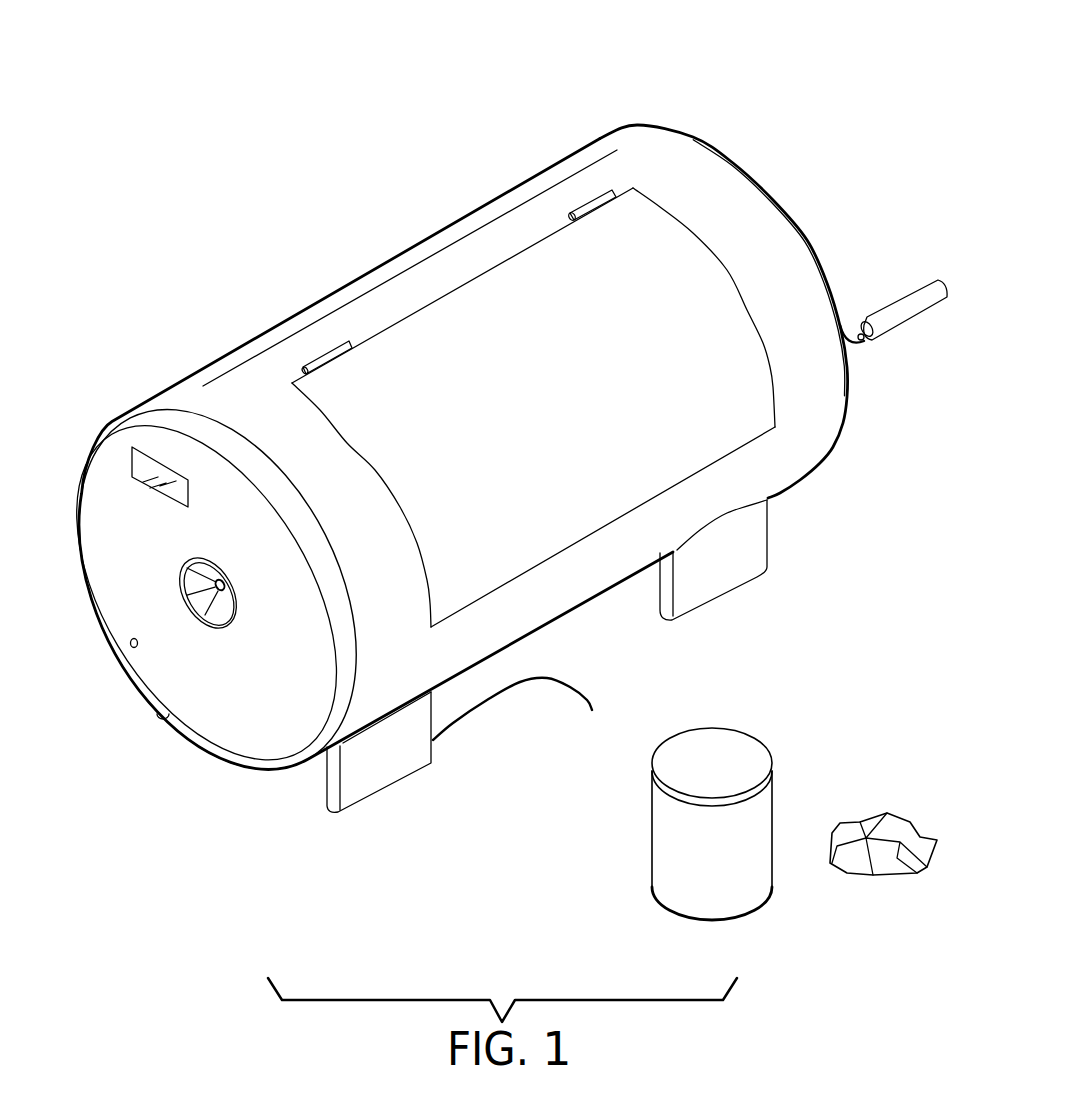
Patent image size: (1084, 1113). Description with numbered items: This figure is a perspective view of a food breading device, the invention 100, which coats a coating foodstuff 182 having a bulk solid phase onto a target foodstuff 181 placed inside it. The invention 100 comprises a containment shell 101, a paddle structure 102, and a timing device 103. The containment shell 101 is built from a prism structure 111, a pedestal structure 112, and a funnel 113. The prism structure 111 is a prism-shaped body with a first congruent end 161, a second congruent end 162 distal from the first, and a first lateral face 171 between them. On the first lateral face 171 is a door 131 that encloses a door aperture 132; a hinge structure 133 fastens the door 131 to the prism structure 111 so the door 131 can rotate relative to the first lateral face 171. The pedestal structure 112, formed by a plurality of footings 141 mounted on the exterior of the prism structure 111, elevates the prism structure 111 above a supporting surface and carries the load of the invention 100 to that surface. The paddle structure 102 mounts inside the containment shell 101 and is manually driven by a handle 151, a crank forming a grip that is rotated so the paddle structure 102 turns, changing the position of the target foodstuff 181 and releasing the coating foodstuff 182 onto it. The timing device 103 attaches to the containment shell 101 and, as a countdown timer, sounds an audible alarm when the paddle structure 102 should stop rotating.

The invention 100 is at (206, 144).
The containment shell 101 is at (367, 272).
The paddle structure 102 is at (862, 332).
The timing device 103 is at (140, 460).
The prism structure 111 is at (652, 147).
The pedestal structure 112 is at (662, 623).
The funnel 113 is at (200, 612).
The door 131 is at (665, 262).
The door aperture 132 is at (742, 312).
The hinge structure 133 is at (583, 212).
The footings 141 is at (735, 548).
The handle 151 is at (946, 290).
The first congruent end 161 is at (231, 715).
The second congruent end 162 is at (712, 148).
The first lateral face 171 is at (238, 357).
The target foodstuff 181 is at (877, 830).
The coating foodstuff 182 is at (727, 760).